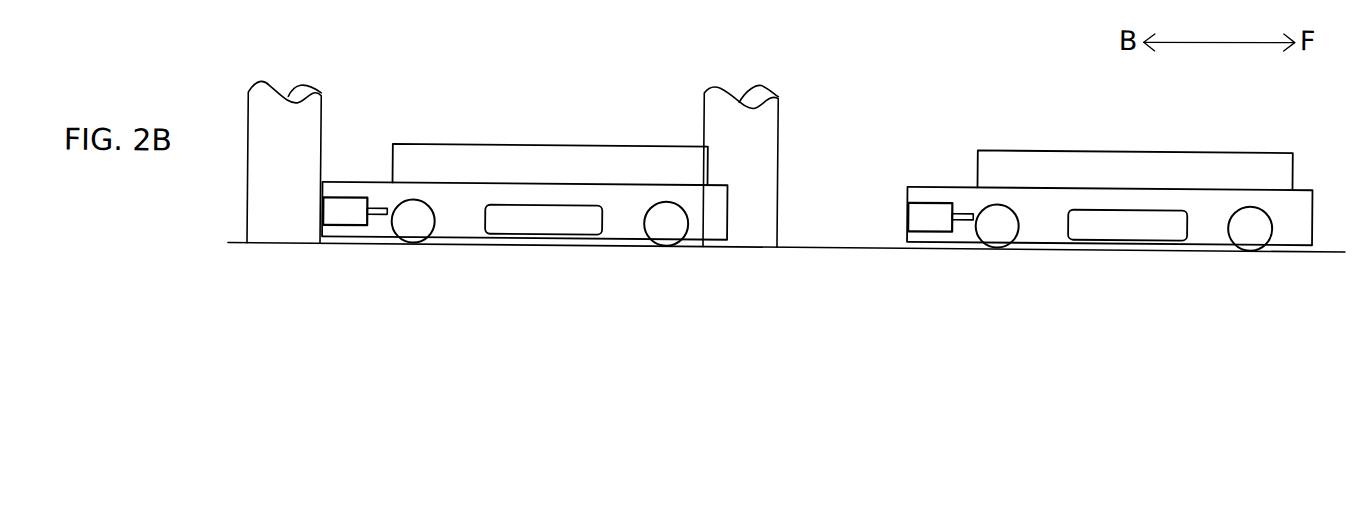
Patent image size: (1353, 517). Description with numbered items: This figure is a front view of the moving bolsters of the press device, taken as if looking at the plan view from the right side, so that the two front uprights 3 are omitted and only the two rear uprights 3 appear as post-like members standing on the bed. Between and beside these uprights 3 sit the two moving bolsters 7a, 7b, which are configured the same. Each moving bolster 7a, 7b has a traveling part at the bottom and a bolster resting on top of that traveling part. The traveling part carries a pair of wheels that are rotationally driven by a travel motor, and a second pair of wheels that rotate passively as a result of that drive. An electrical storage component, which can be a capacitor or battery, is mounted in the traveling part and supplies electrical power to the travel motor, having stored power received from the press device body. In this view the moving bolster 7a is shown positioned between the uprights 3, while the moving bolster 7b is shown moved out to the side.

The upright 3 is at (278, 183).
The moving bolster 7a is at (513, 183).
The moving bolster 7b is at (1093, 218).